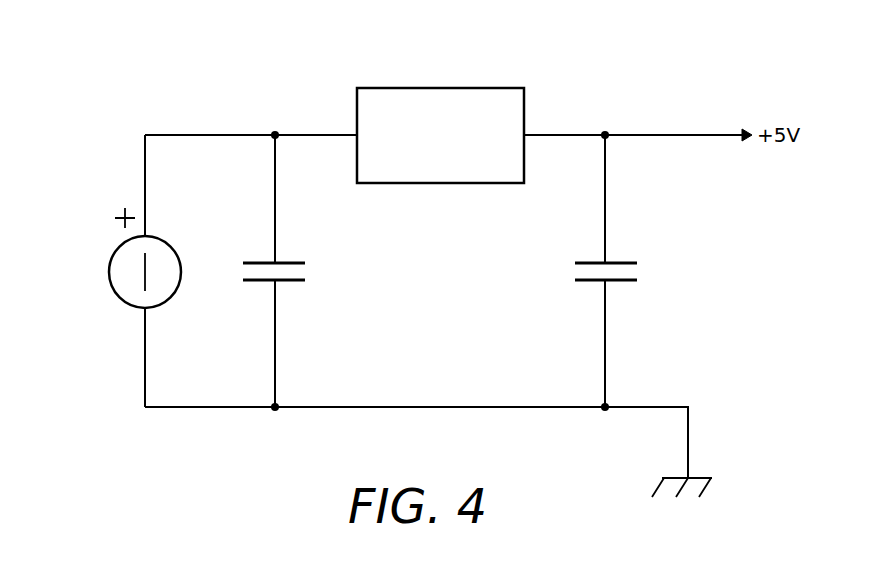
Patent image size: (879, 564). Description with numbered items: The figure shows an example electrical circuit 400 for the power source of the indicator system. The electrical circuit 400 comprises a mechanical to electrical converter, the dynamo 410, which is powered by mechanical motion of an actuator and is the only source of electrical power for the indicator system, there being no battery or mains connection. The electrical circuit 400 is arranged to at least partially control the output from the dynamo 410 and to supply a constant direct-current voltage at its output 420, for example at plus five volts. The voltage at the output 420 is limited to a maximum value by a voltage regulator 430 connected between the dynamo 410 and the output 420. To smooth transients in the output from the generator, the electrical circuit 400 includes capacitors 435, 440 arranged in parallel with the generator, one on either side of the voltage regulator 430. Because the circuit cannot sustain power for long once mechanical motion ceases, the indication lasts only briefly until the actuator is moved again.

The electrical circuit 400 is at (143, 67).
The dynamo 410 is at (108, 268).
The output 420 is at (605, 132).
The voltage regulator 430 is at (490, 87).
The capacitor 435 is at (307, 271).
The capacitor 440 is at (639, 271).